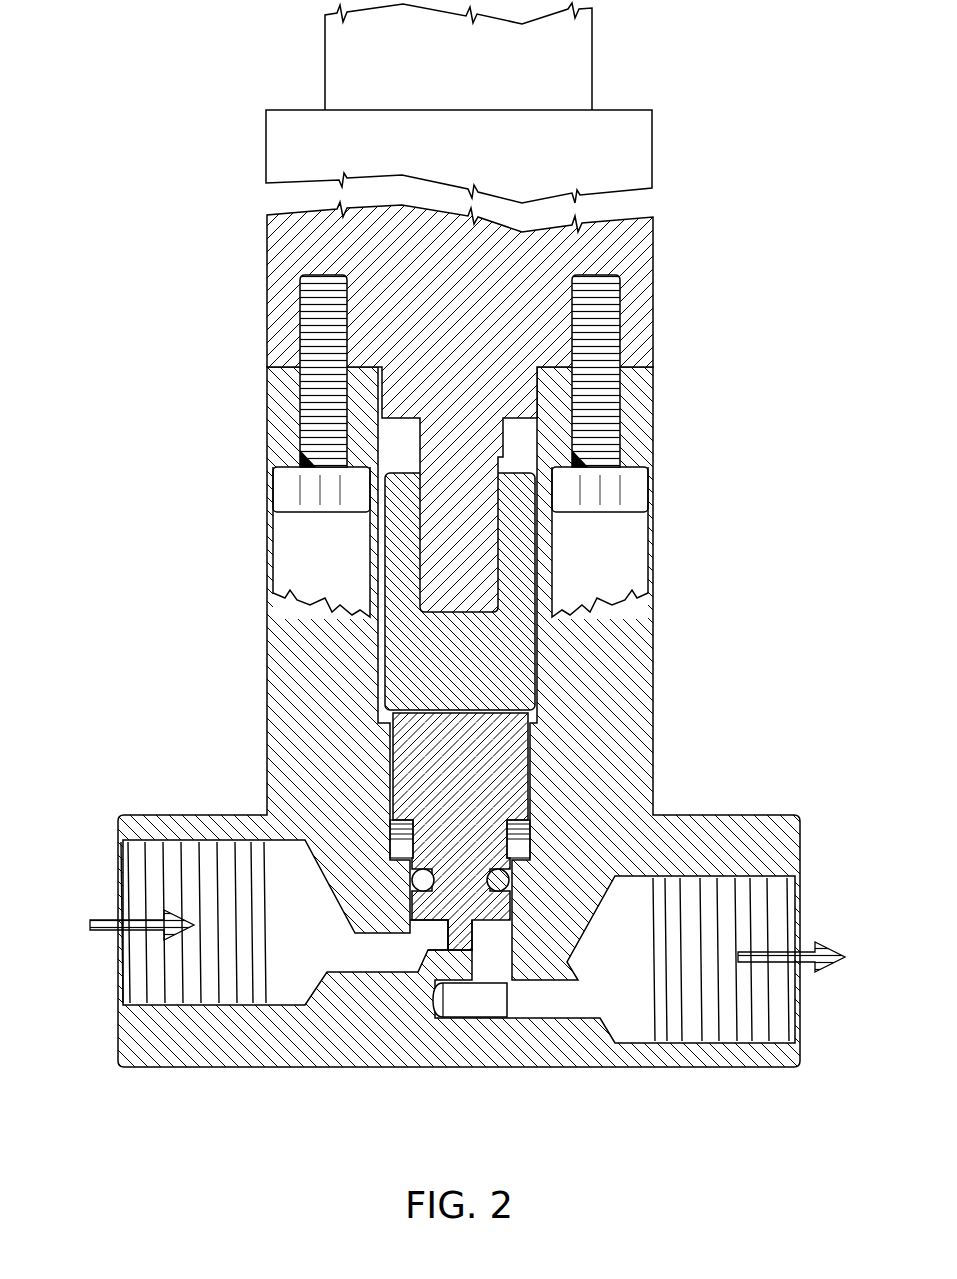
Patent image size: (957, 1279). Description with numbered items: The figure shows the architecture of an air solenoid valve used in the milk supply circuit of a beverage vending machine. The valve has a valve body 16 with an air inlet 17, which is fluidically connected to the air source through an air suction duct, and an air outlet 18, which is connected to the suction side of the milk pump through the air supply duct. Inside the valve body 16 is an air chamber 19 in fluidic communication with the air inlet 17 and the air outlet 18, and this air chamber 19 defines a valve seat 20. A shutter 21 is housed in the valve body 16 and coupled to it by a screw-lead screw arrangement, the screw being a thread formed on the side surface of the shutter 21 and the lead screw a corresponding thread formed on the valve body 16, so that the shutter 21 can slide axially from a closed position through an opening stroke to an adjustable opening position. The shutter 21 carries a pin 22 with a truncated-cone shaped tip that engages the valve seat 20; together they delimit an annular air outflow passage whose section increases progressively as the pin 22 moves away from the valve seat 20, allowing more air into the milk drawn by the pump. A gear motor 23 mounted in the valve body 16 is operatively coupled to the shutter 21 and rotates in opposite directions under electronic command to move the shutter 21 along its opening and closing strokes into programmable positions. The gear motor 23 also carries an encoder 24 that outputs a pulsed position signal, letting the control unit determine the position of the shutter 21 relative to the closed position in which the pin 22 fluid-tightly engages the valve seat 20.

The valve body 16 is at (607, 742).
The air inlet 17 is at (157, 891).
The air outlet 18 is at (748, 924).
The air chamber 19 is at (433, 938).
The valve seat 20 is at (465, 942).
The shutter 21 is at (393, 753).
The pin 22 is at (490, 942).
The gear motor 23 is at (280, 266).
The encoder 24 is at (338, 42).